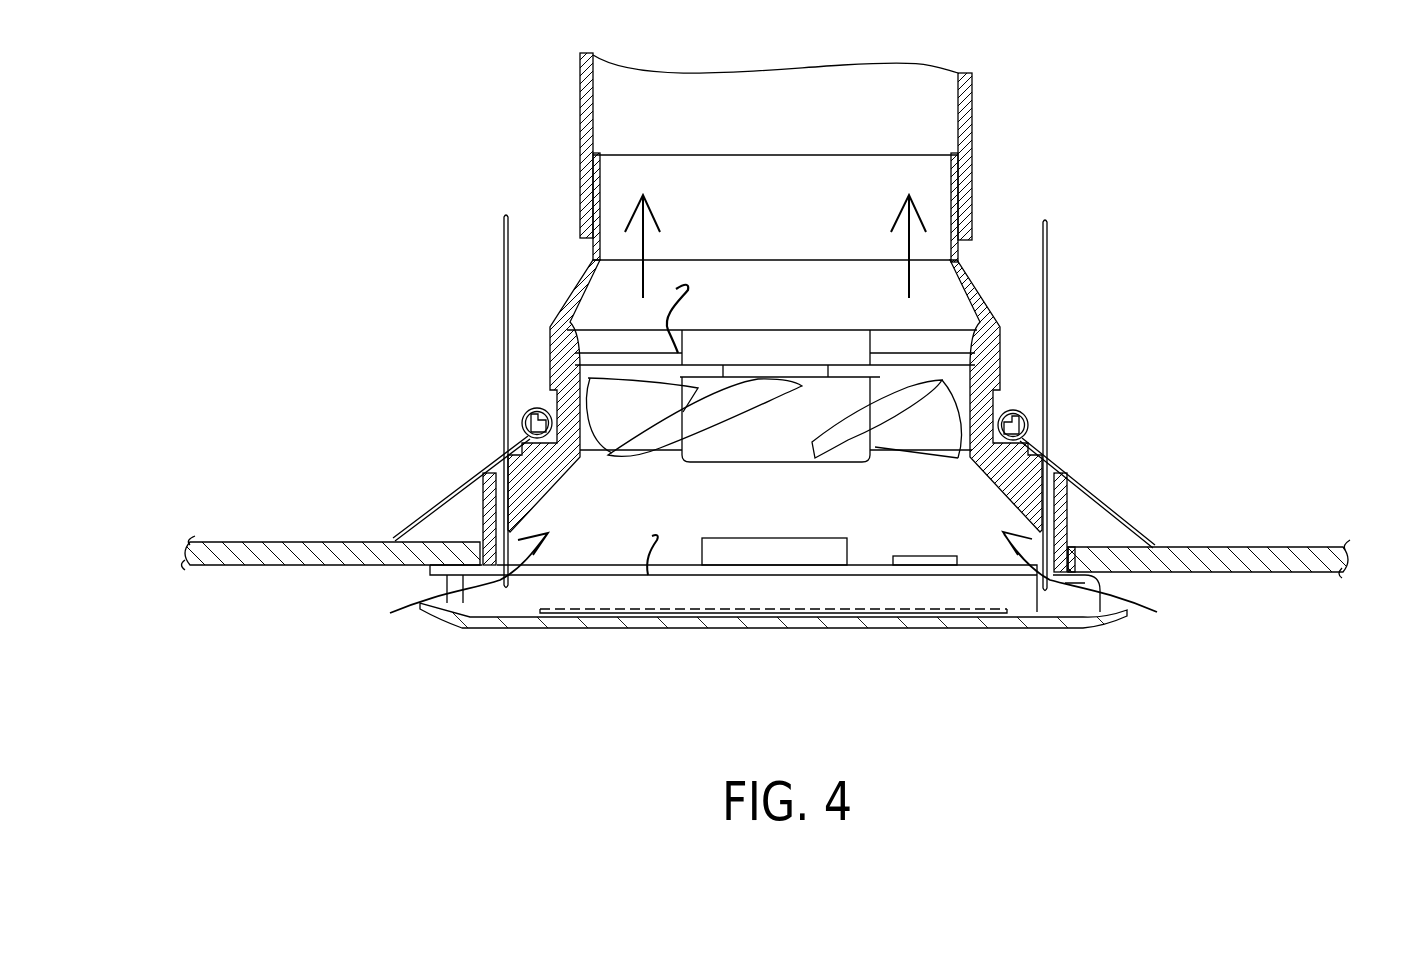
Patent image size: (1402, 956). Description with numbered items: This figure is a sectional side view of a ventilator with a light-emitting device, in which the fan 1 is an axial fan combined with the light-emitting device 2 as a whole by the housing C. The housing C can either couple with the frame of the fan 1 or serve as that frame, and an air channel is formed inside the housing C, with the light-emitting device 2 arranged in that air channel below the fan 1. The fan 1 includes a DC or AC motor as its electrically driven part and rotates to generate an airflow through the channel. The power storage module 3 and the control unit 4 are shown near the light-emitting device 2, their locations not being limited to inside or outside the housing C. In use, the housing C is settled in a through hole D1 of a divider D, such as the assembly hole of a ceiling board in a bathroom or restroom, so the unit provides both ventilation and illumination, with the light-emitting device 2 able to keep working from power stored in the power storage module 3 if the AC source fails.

The fan 1 is at (847, 393).
The light-emitting device 2 is at (850, 598).
The power storage module 3 is at (828, 538).
The control unit 4 is at (942, 555).
The housing C is at (550, 286).
The divider D is at (1227, 547).
The through hole D1 is at (1070, 548).